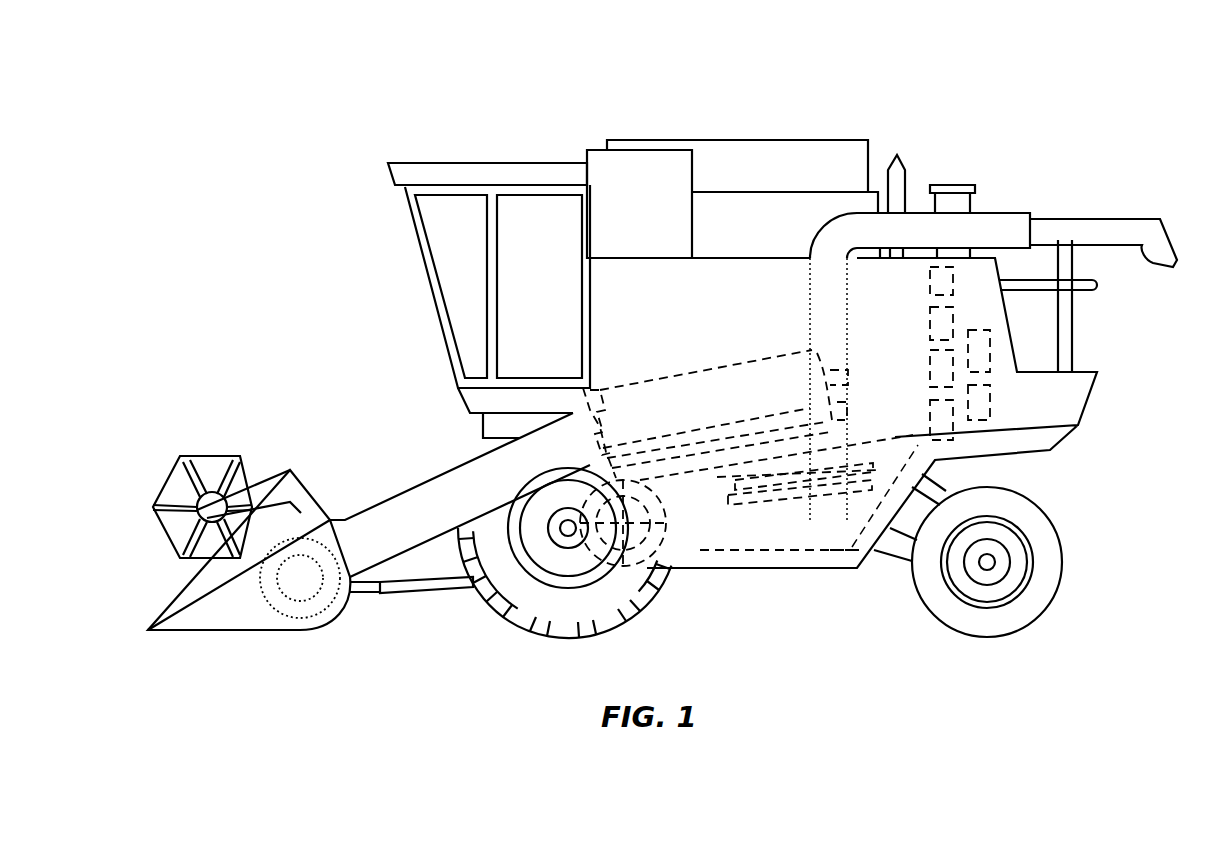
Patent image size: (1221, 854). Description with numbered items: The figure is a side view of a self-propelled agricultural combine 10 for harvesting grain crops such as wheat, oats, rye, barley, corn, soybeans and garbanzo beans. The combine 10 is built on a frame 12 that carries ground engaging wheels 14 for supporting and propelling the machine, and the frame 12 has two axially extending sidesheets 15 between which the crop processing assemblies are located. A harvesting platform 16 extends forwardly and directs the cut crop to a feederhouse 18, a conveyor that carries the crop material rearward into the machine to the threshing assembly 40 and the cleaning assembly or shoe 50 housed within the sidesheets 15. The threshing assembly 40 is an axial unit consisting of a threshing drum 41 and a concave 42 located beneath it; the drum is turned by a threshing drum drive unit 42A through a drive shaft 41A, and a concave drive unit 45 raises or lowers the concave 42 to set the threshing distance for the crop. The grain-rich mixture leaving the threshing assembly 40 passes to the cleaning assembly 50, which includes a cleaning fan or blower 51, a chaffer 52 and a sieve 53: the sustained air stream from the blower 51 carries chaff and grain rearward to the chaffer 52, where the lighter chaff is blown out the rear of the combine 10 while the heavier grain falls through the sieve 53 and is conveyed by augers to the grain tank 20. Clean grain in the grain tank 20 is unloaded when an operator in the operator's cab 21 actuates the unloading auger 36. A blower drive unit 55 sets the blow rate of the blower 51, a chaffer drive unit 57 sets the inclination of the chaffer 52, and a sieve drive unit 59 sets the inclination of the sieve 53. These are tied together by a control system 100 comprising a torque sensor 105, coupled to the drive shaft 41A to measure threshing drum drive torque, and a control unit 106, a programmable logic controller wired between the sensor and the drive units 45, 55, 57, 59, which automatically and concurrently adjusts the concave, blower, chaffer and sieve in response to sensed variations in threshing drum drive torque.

The agricultural combine 10 is at (970, 98).
The frame 12 is at (870, 555).
The wheels 14 is at (520, 610).
The sidesheets 15 is at (780, 542).
The harvesting platform 16 is at (235, 612).
The feederhouse 18 is at (413, 490).
The grain tank 20 is at (792, 184).
The operator's cab 21 is at (549, 256).
The unloading auger 36 is at (997, 212).
The threshing assembly 40 is at (654, 370).
The threshing drum 41 is at (737, 368).
The drive shaft 41A is at (600, 443).
The concave 42 is at (812, 350).
The threshing drum drive unit 42A is at (960, 438).
The concave drive unit 45 is at (957, 277).
The cleaning assembly 50 is at (715, 563).
The cleaning fan or blower 51 is at (632, 598).
The chaffer 52 is at (717, 473).
The sieve 53 is at (760, 507).
The blower drive unit 55 is at (953, 320).
The chaffer drive unit 57 is at (932, 368).
The sieve drive unit 59 is at (992, 407).
The control system 100 is at (992, 363).
The torque sensor 105 is at (583, 407).
The control unit 106 is at (1003, 330).